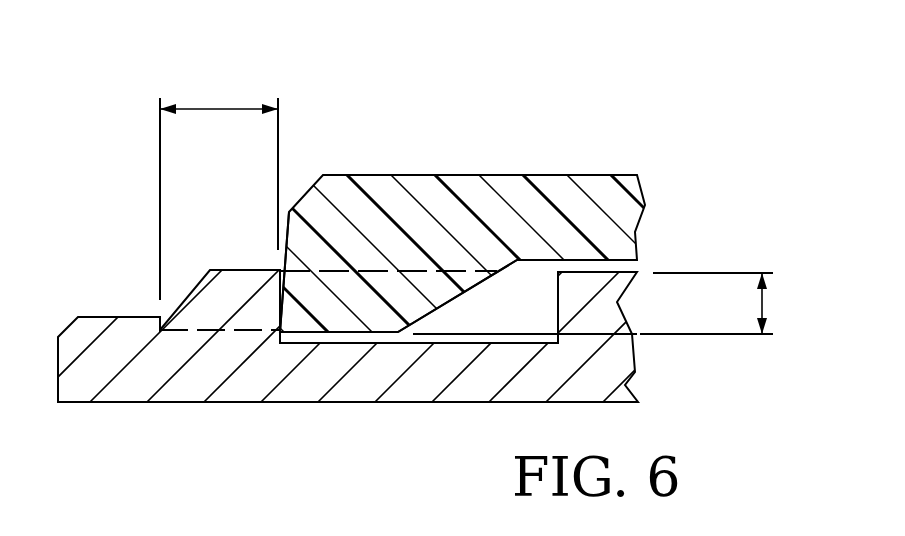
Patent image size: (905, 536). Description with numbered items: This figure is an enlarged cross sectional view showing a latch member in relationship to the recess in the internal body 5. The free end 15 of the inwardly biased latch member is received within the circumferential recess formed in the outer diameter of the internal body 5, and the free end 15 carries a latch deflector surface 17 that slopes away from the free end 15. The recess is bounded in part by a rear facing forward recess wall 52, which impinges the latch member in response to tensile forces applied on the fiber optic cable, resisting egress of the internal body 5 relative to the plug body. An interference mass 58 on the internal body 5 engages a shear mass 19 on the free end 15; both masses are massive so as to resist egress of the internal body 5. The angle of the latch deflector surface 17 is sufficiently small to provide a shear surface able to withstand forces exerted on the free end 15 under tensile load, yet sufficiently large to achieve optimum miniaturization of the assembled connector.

The internal body 5 is at (360, 404).
The free end 15 is at (457, 162).
The latch deflector surface 17 is at (488, 281).
The shear mass 19 is at (765, 302).
The rear facing forward recess wall 52 is at (281, 297).
The interference mass 58 is at (232, 108).